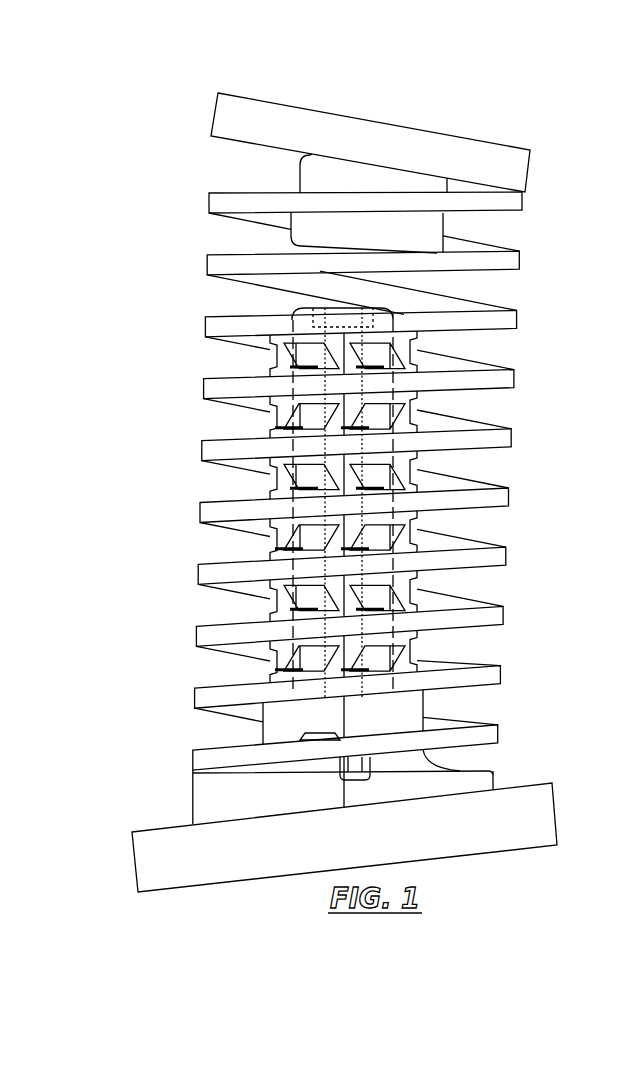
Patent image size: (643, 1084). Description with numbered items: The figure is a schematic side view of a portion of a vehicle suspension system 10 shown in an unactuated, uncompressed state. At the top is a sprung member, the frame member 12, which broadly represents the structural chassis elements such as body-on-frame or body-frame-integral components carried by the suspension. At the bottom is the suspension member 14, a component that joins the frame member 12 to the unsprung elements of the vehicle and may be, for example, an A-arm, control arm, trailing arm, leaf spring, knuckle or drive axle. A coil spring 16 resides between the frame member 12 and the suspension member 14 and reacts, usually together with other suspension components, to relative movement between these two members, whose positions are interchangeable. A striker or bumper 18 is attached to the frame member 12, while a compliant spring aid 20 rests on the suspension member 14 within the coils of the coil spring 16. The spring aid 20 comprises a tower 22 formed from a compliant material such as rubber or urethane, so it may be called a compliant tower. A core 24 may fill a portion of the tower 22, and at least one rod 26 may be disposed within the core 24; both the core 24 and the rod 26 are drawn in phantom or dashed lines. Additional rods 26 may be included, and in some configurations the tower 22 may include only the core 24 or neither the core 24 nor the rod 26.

The suspension system 10 is at (100, 202).
The frame member 12 is at (508, 162).
The suspension member 14 is at (152, 845).
The coil spring 16 is at (217, 267).
The bumper 18 is at (307, 186).
The compliant spring aid 20 is at (218, 477).
The tower 22 is at (282, 362).
The core 24 is at (287, 563).
The rod 26 is at (323, 403).